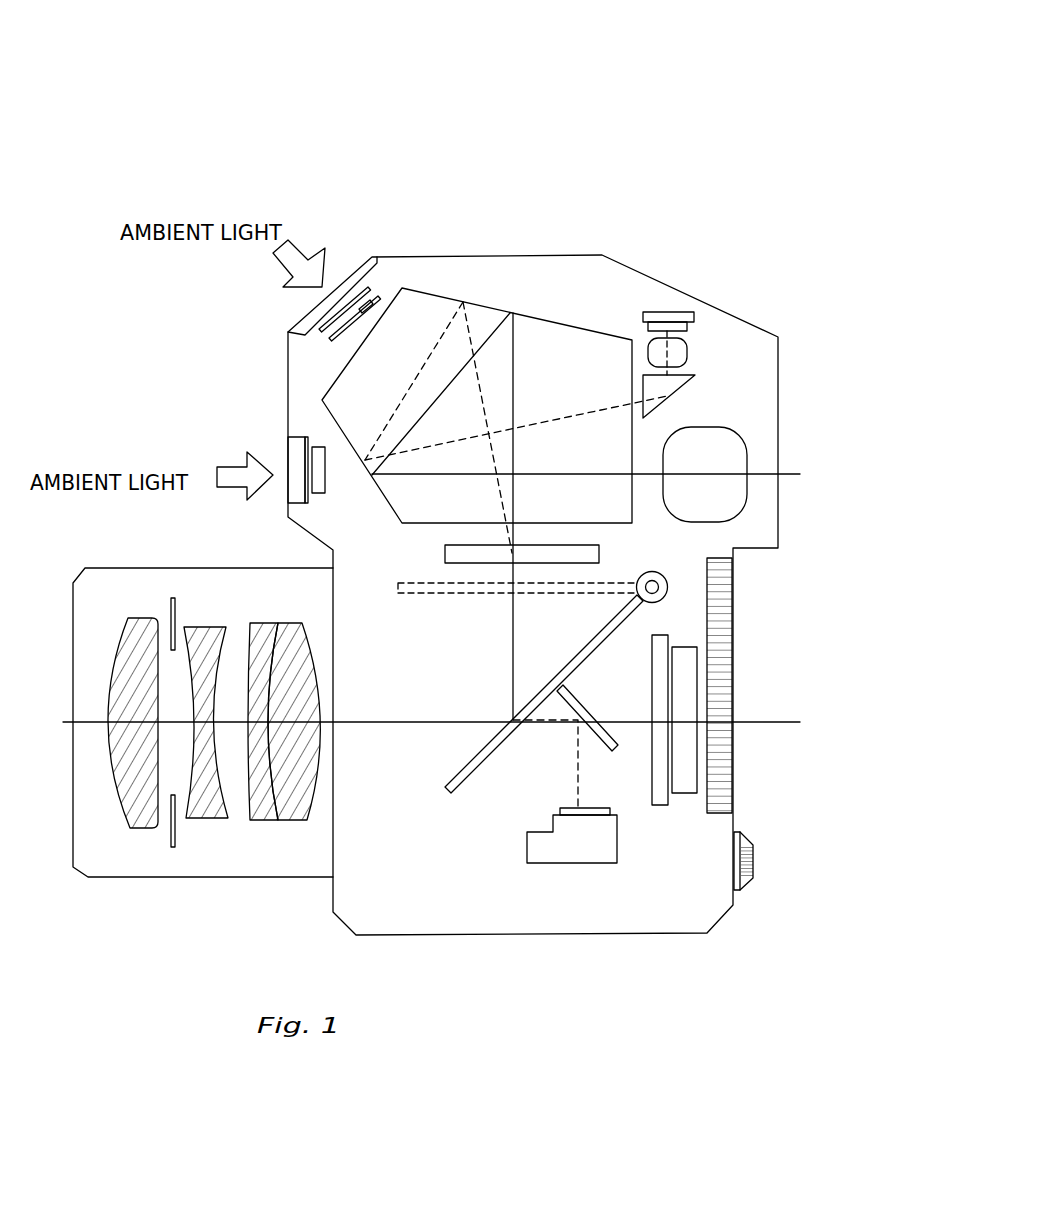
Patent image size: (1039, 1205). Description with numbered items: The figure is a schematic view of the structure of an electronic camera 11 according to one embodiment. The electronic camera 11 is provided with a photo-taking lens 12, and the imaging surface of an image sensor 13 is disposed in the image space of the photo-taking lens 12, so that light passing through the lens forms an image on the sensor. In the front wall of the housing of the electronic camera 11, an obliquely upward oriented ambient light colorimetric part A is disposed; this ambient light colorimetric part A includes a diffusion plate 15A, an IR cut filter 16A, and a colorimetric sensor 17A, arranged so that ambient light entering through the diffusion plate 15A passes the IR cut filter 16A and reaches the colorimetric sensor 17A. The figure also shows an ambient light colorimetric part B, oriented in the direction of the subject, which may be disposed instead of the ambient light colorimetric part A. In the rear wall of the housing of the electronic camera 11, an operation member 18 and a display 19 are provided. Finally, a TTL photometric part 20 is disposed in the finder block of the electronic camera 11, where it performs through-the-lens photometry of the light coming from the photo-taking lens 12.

The electronic camera 11 is at (500, 935).
The photo-taking lens 12 is at (190, 877).
The image sensor 13 is at (688, 795).
The diffusion plate 15A is at (346, 270).
The IR cut filter 16A is at (375, 285).
The colorimetric sensor 17A is at (373, 302).
The operation member 18 is at (753, 860).
The display 19 is at (732, 610).
The TTL photometric part 20 is at (697, 333).
The ambient light colorimetric part A is at (762, 240).
The ambient light colorimetric part B is at (280, 453).